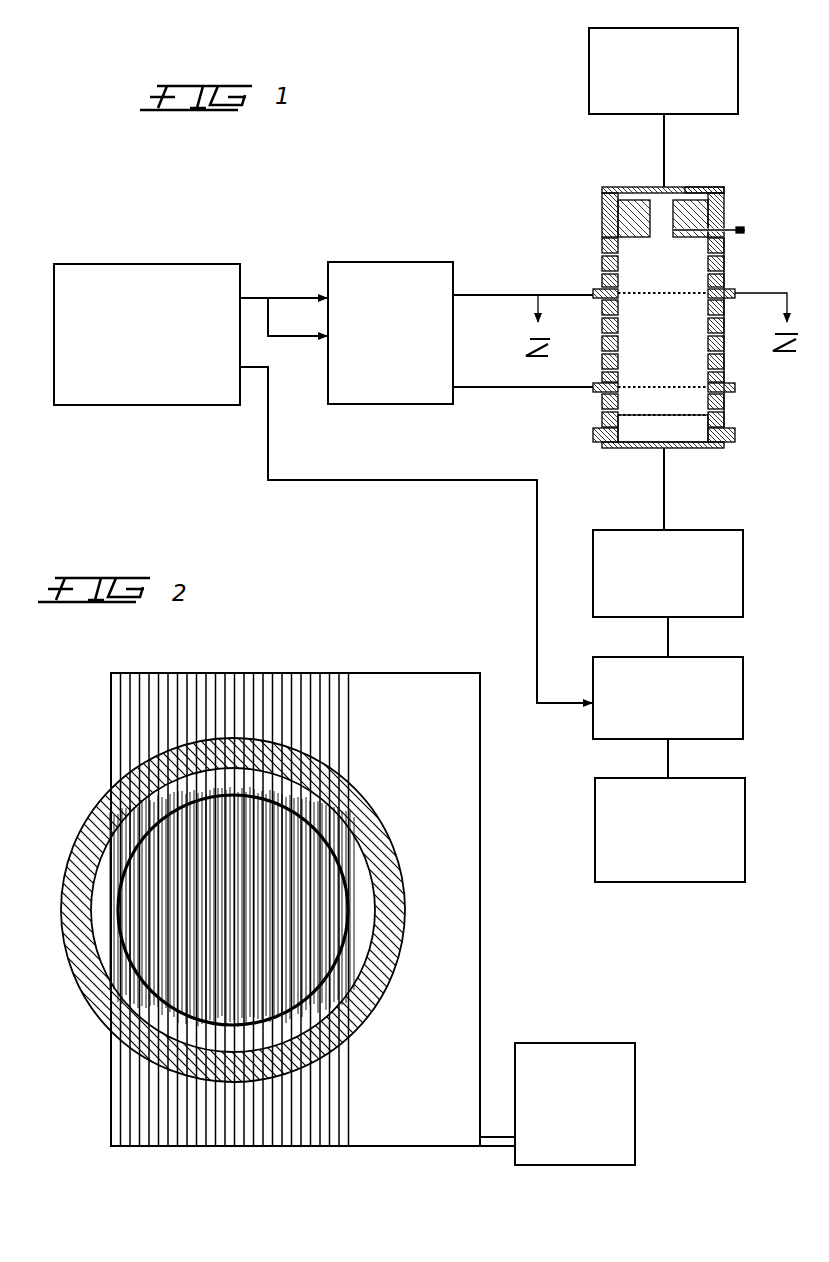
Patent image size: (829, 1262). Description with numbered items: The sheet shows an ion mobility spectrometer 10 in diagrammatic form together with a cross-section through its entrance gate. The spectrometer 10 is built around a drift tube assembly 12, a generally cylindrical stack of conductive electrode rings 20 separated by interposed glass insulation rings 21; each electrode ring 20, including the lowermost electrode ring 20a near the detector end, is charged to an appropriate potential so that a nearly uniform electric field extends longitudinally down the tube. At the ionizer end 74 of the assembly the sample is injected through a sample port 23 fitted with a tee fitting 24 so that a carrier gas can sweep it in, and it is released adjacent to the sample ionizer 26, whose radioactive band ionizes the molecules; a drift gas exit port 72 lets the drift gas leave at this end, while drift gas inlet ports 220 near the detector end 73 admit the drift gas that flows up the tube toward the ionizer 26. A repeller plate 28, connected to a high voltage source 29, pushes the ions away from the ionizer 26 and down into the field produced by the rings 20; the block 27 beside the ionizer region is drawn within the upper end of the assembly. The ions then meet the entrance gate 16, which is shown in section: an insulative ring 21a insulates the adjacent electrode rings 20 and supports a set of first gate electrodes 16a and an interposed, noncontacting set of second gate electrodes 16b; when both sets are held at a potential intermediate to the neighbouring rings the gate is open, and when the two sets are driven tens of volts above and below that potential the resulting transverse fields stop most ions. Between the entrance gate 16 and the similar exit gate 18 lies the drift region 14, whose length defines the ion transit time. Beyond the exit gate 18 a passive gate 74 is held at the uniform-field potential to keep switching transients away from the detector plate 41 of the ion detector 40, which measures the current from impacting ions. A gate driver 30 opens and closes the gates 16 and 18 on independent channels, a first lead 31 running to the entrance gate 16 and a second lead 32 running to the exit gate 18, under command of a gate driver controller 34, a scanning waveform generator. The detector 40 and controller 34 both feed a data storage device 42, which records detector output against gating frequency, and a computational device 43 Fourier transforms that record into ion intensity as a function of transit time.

In FIG. 1, the ion mobility spectrometer 10 is at (268, 215).
In FIG. 1, the drift tube assembly 12 is at (654, 321).
In FIG. 1, the drift region 14 is at (726, 330).
In FIG. 1, the entrance gate 16 is at (680, 296).
In FIG. 2, the entrance gate 16 is at (282, 923).
In FIG. 2, the first gate electrodes 16a is at (288, 672).
In FIG. 2, the second gate electrodes 16b is at (258, 1148).
In FIG. 1, the exit gate 18 is at (657, 384).
In FIG. 1, the electrode rings 20 is at (602, 281).
In FIG. 1, the guard ring electrode 20a is at (602, 418).
In FIG. 1, the insulation rings 21 is at (602, 346).
In FIG. 1, the insulative ring 21a is at (738, 290).
In FIG. 2, the insulative ring 21a is at (362, 858).
In FIG. 1, the sample port 23 is at (745, 233).
In FIG. 1, the tee fitting 24 is at (740, 226).
In FIG. 1, the sample ionizer 26 is at (730, 198).
In FIG. 1, the inlet block 27 is at (650, 225).
In FIG. 1, the repeller plate 28 is at (636, 187).
In FIG. 1, the high voltage source 29 is at (589, 70).
In FIG. 1, the gate driver 30 is at (354, 395).
In FIG. 2, the gate driver 30 is at (608, 1043).
In FIG. 1, the first gate lead 31 is at (510, 293).
In FIG. 1, the second gate lead 32 is at (515, 390).
In FIG. 1, the gate driver controller 34 is at (157, 398).
In FIG. 1, the ion detector 40 is at (733, 558).
In FIG. 1, the detector plate 41 is at (636, 449).
In FIG. 1, the data storage device 42 is at (733, 690).
In FIG. 1, the computational device 43 is at (740, 826).
In FIG. 1, the drift gas exit port 72 is at (690, 187).
In FIG. 1, the detector end 73 is at (690, 458).
In FIG. 1, the passive gate 74 is at (615, 165).
In FIG. 1, the drift gas inlet ports 220 is at (593, 432).